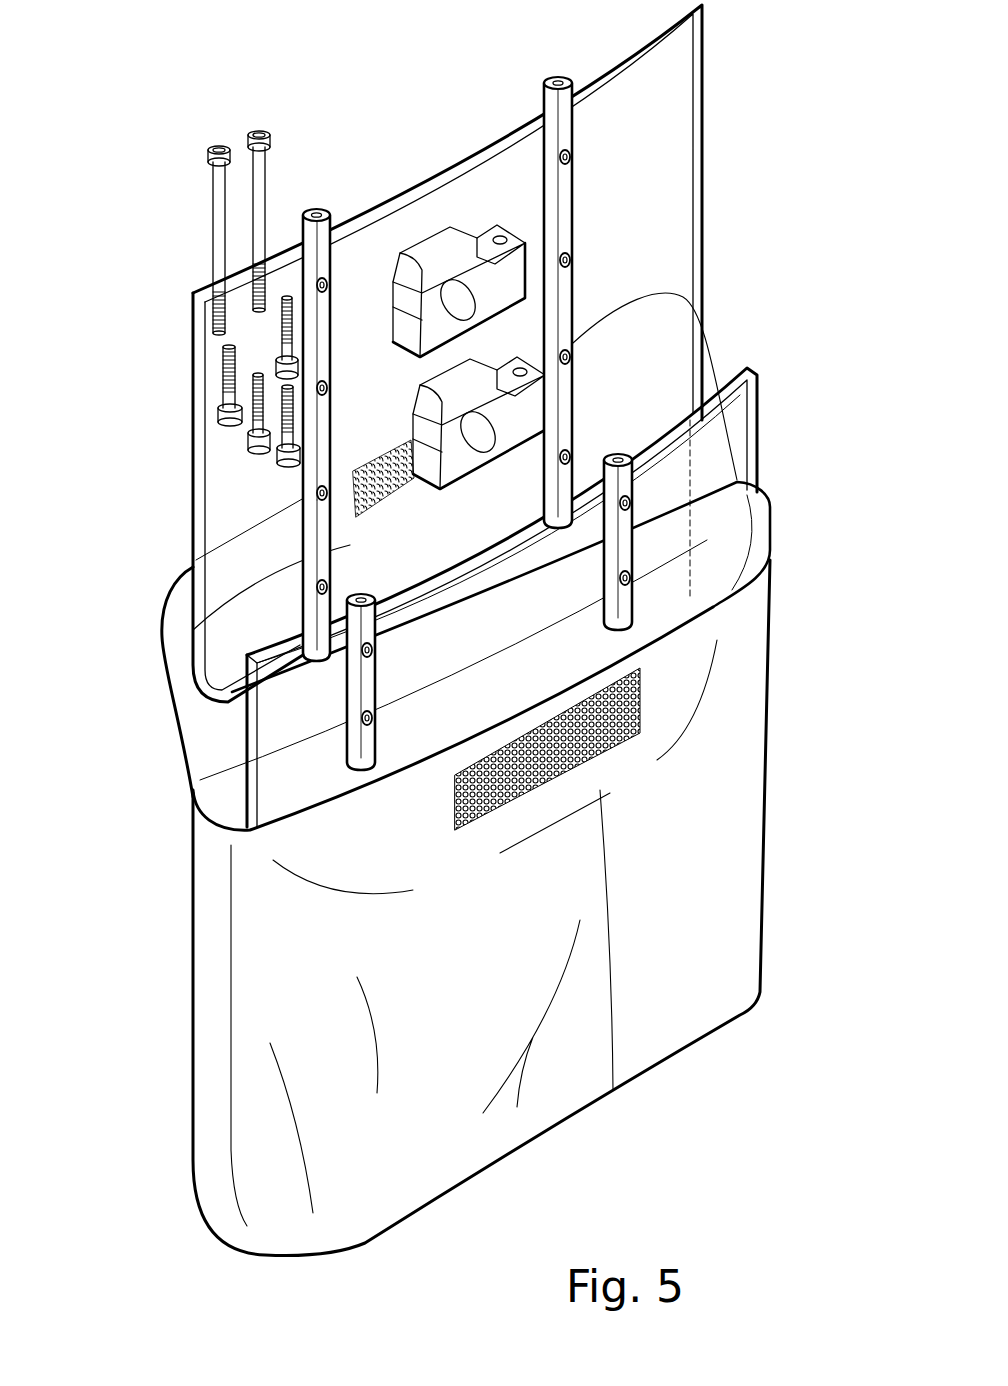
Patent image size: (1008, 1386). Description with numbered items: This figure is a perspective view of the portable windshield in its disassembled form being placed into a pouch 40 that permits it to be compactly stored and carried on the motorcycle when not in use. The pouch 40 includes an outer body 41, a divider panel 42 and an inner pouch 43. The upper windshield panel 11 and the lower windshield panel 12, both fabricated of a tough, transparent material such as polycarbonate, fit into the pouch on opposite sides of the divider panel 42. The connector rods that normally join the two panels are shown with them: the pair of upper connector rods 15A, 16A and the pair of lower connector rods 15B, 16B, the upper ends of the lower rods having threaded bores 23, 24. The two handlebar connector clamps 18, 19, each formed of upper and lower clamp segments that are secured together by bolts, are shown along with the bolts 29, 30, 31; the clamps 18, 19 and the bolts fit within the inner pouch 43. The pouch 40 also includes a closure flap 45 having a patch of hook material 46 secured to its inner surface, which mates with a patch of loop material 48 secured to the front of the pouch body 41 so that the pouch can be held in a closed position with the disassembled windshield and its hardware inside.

The upper windshield panel 11 is at (737, 412).
The lower windshield panel 12 is at (660, 92).
The upper connector rod 15A is at (625, 535).
The lower connector rod 15B is at (310, 553).
The upper connector rod 16A is at (347, 692).
The lower connector rod 16B is at (553, 216).
The handlebar connector clamp 18 is at (432, 240).
The handlebar connector clamp 19 is at (493, 385).
The threaded bore 23 is at (318, 210).
The threaded bore 24 is at (556, 76).
The bolts 29 is at (258, 128).
The bolts 30 is at (280, 337).
The bolts 31 is at (280, 460).
The pouch 40 is at (158, 1132).
The outer body 41 is at (713, 965).
The divider panel 42 is at (707, 575).
The inner pouch 43 is at (513, 650).
The closure flap 45 is at (180, 607).
The patch of hook material 46 is at (350, 468).
The patch of loop material 48 is at (613, 1090).